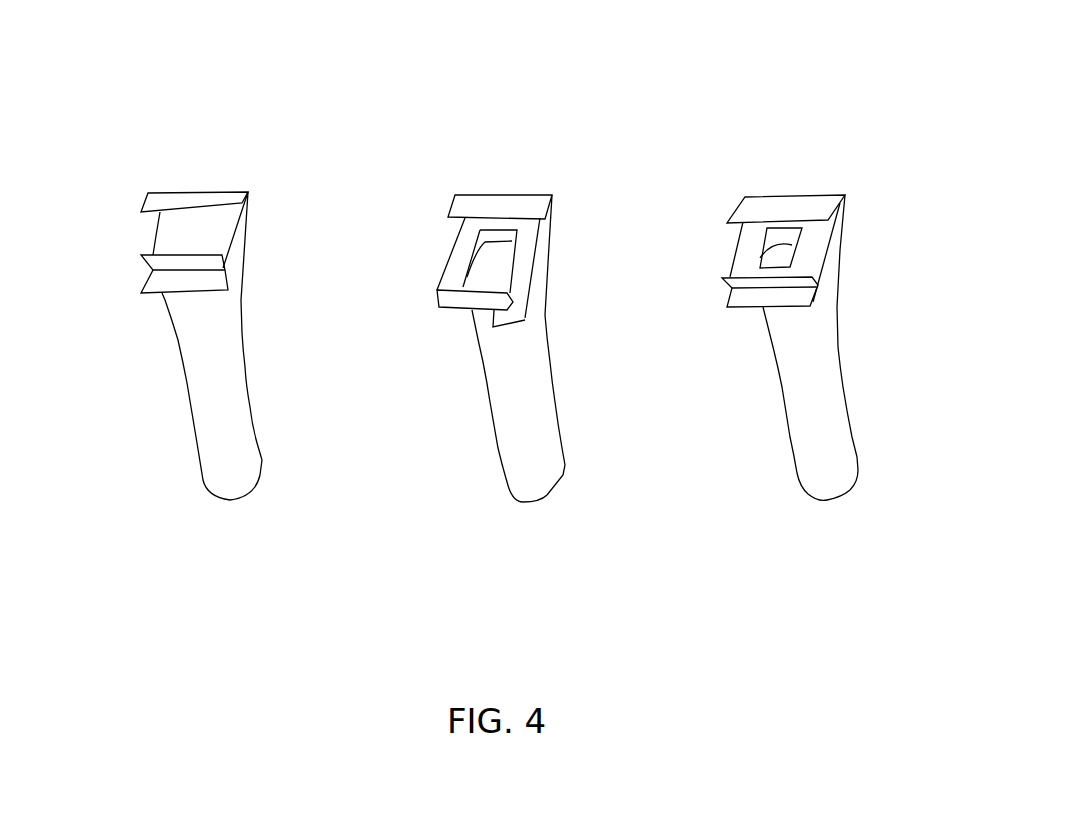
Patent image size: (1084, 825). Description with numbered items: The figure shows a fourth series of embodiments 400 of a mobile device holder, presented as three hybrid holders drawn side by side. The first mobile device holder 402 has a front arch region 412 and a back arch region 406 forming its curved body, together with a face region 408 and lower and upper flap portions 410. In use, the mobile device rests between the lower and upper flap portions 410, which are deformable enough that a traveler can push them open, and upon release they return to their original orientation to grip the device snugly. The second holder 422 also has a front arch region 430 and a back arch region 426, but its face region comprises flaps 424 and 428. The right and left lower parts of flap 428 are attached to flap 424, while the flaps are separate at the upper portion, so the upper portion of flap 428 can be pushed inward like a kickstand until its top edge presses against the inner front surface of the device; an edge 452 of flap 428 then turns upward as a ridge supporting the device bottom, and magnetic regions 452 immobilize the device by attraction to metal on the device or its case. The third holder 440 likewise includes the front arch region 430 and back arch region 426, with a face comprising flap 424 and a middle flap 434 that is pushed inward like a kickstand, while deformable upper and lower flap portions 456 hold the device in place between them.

The fourth series of embodiments 400 is at (504, 288).
The mobile device holder 402 is at (231, 546).
The back arch region 406 is at (240, 337).
The face region 408 is at (167, 247).
The lower and upper flap portions 410 is at (223, 267).
The front arch region 412 is at (197, 372).
The mobile device holder 422 is at (537, 571).
The flap 424 is at (453, 245).
The back arch region 426 is at (547, 352).
The flap 428 is at (497, 260).
The front arch region 430 is at (502, 378).
The flap 434 is at (780, 250).
The mobile device holder 440 is at (855, 556).
The edge / magnetic regions 452 is at (526, 205).
The upper and lower flap portions 456 is at (820, 282).